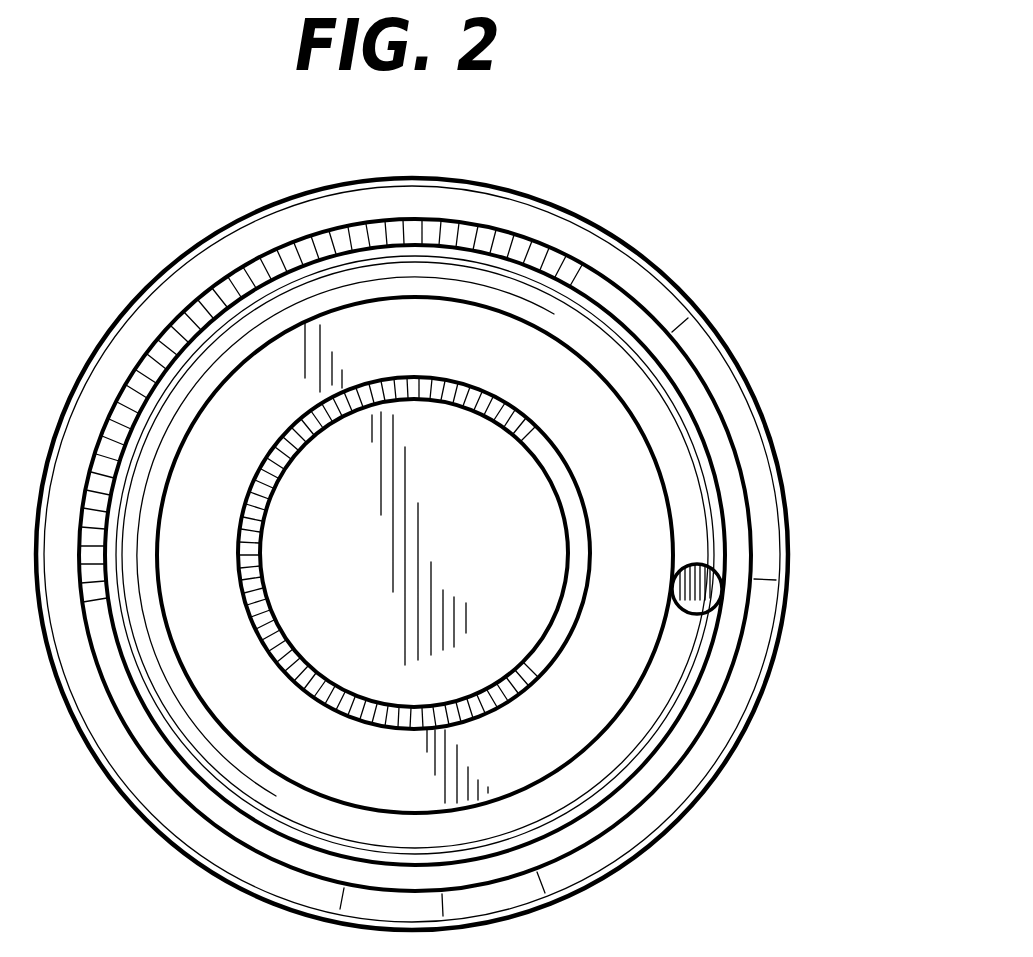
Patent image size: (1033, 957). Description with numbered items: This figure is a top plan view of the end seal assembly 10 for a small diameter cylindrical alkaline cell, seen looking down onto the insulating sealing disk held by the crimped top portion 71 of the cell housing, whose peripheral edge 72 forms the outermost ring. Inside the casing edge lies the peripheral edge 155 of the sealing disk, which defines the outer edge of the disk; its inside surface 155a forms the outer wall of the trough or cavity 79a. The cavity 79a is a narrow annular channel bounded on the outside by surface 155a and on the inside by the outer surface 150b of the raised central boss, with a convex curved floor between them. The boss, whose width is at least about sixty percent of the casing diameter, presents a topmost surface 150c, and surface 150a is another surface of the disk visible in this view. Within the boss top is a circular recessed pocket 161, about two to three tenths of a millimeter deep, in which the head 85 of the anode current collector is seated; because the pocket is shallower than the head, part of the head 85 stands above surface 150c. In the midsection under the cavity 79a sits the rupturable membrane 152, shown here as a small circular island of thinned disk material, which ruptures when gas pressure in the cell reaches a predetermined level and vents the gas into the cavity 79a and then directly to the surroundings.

The end seal assembly 10 is at (479, 542).
The top portion of the cell housing 71 is at (705, 797).
The peripheral edge of the casing 72 is at (757, 647).
The cavity 79a is at (665, 692).
The head of current collector 85 is at (420, 422).
The ring surface 150a is at (545, 435).
The outer surface of boss 150b is at (652, 447).
The topmost surface of raised boss 150c is at (598, 432).
The rupturable membrane 152 is at (723, 593).
The peripheral edge of sealing disk 155 is at (727, 480).
The outer surface of cavity 155a is at (728, 532).
The recessed pocket 161 is at (505, 420).